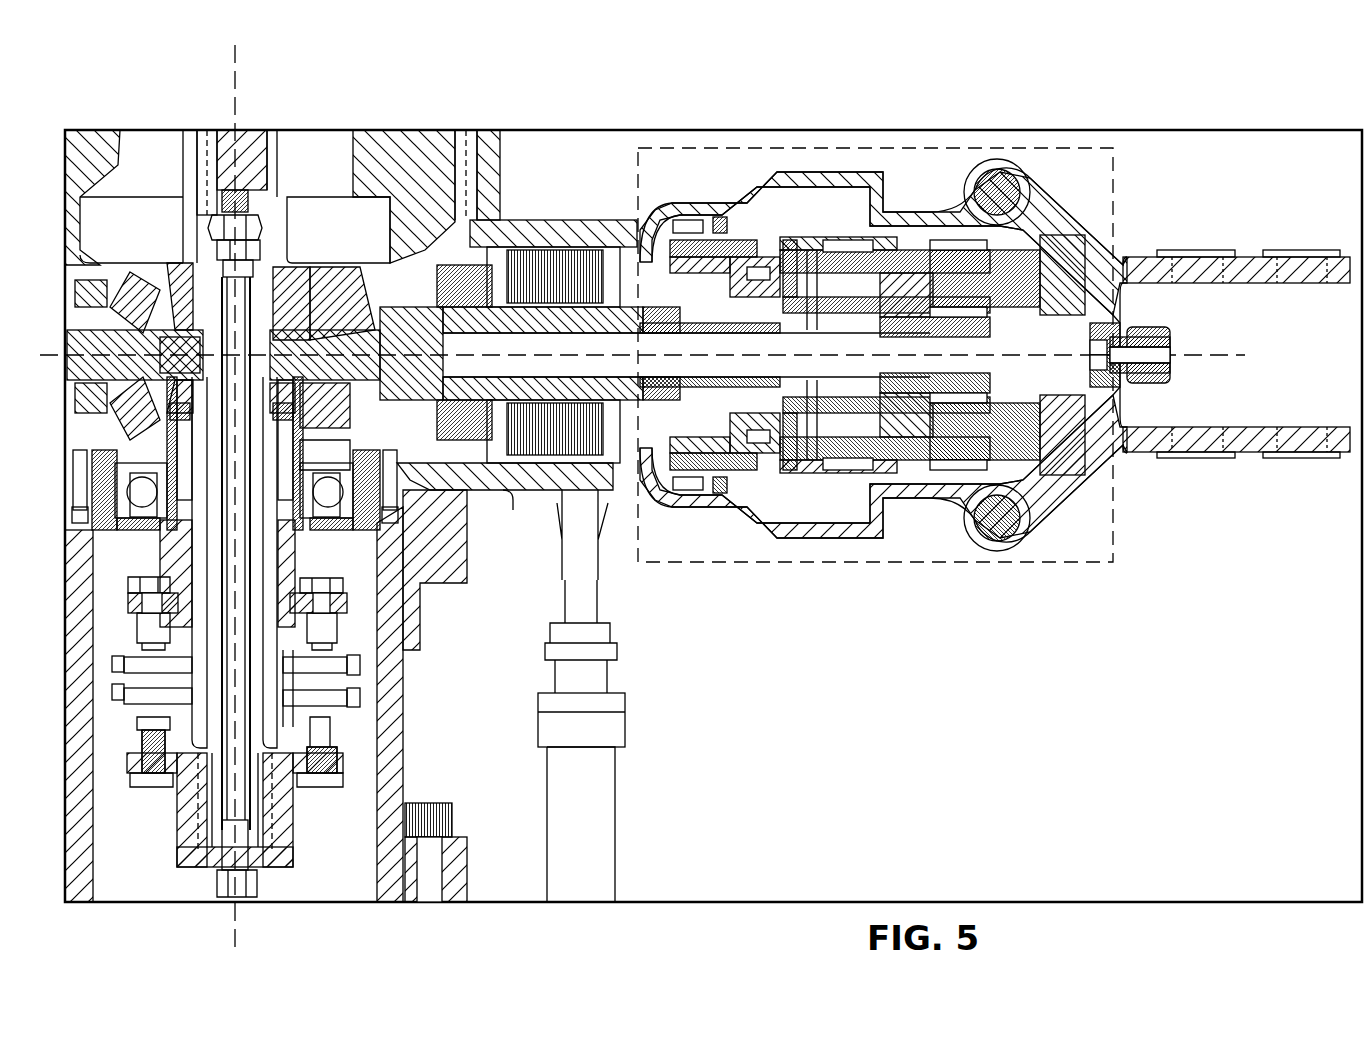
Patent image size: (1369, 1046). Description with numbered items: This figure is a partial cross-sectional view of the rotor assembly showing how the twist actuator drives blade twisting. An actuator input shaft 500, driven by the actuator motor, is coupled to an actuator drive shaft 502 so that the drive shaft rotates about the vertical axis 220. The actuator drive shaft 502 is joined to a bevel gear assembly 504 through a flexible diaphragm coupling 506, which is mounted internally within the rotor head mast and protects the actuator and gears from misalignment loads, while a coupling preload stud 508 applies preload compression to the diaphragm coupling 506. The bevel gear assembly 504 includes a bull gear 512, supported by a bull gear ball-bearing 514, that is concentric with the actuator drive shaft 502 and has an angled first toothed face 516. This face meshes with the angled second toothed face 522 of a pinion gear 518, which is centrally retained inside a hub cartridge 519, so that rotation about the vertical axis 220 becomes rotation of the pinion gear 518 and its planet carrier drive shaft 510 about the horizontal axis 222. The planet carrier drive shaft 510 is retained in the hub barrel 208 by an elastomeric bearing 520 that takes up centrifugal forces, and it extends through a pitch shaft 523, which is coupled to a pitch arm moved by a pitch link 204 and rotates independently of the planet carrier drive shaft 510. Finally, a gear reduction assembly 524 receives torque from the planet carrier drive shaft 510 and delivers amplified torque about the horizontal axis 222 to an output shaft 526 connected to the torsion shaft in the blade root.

The pitch link 204 is at (615, 807).
The hub barrel 208 is at (602, 222).
The vertical axis 220 is at (235, 946).
The horizontal axis 222 is at (1233, 352).
The actuator input shaft 500 is at (227, 140).
The actuator drive shaft 502 is at (277, 180).
The bevel gear assembly 504 is at (470, 565).
The diaphragm coupling 506 is at (360, 672).
The coupling preload stud 508 is at (250, 708).
The planet carrier drive shaft 510 is at (432, 315).
The bull gear 512 is at (330, 490).
The bull gear ball-bearing 514 is at (376, 452).
The first toothed face 516 is at (142, 375).
The pinion gear 518 is at (468, 505).
The hub cartridge 519 is at (338, 228).
The elastomeric bearing 520 is at (552, 410).
The second toothed face 522 is at (160, 330).
The pitch shaft 523 is at (615, 480).
The gear reduction assembly 524 is at (864, 370).
The output shaft 526 is at (1153, 322).